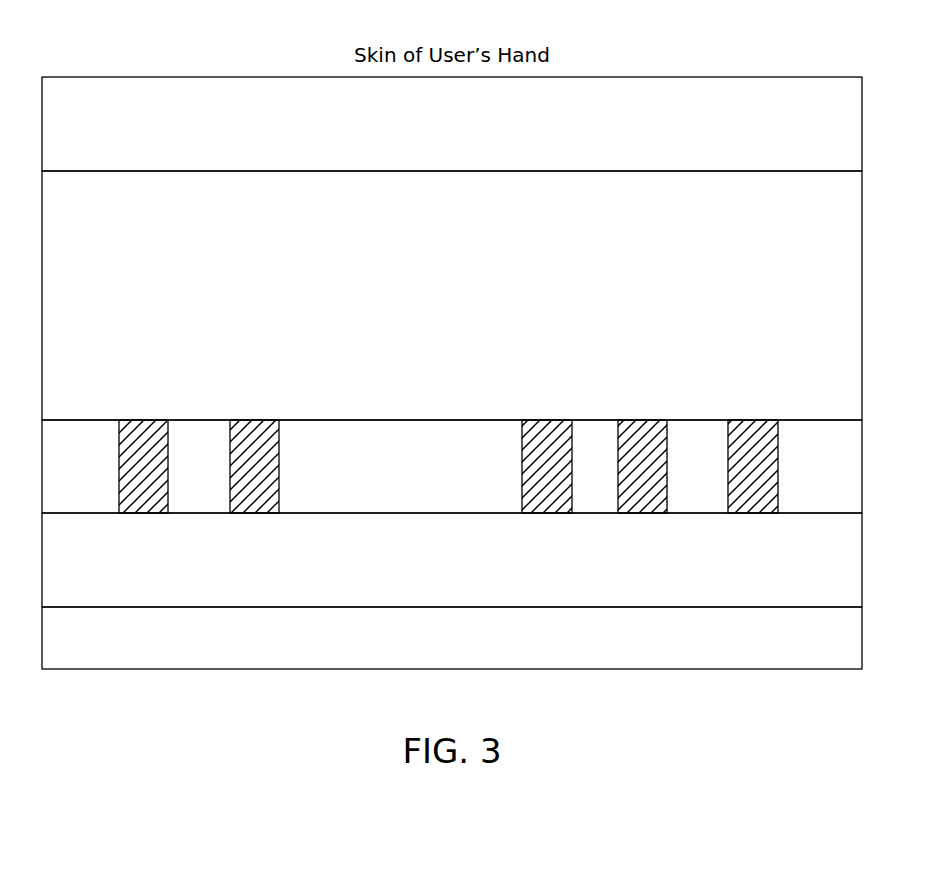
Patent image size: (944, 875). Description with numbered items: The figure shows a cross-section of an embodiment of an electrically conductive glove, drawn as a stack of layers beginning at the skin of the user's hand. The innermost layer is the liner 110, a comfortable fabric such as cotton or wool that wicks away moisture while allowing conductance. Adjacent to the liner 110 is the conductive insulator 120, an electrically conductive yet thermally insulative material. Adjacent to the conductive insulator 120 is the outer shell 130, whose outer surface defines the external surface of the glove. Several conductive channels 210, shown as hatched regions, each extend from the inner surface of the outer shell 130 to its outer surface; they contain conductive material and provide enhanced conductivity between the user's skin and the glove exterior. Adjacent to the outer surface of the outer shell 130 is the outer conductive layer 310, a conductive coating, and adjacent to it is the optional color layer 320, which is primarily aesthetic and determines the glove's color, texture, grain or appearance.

The liner 110 is at (434, 144).
The conductive insulator 120 is at (434, 316).
The outer shell 130 is at (434, 490).
The conductive channel 210 is at (755, 412).
The outer conductive layer 310 is at (434, 584).
The color layer 320 is at (434, 660).